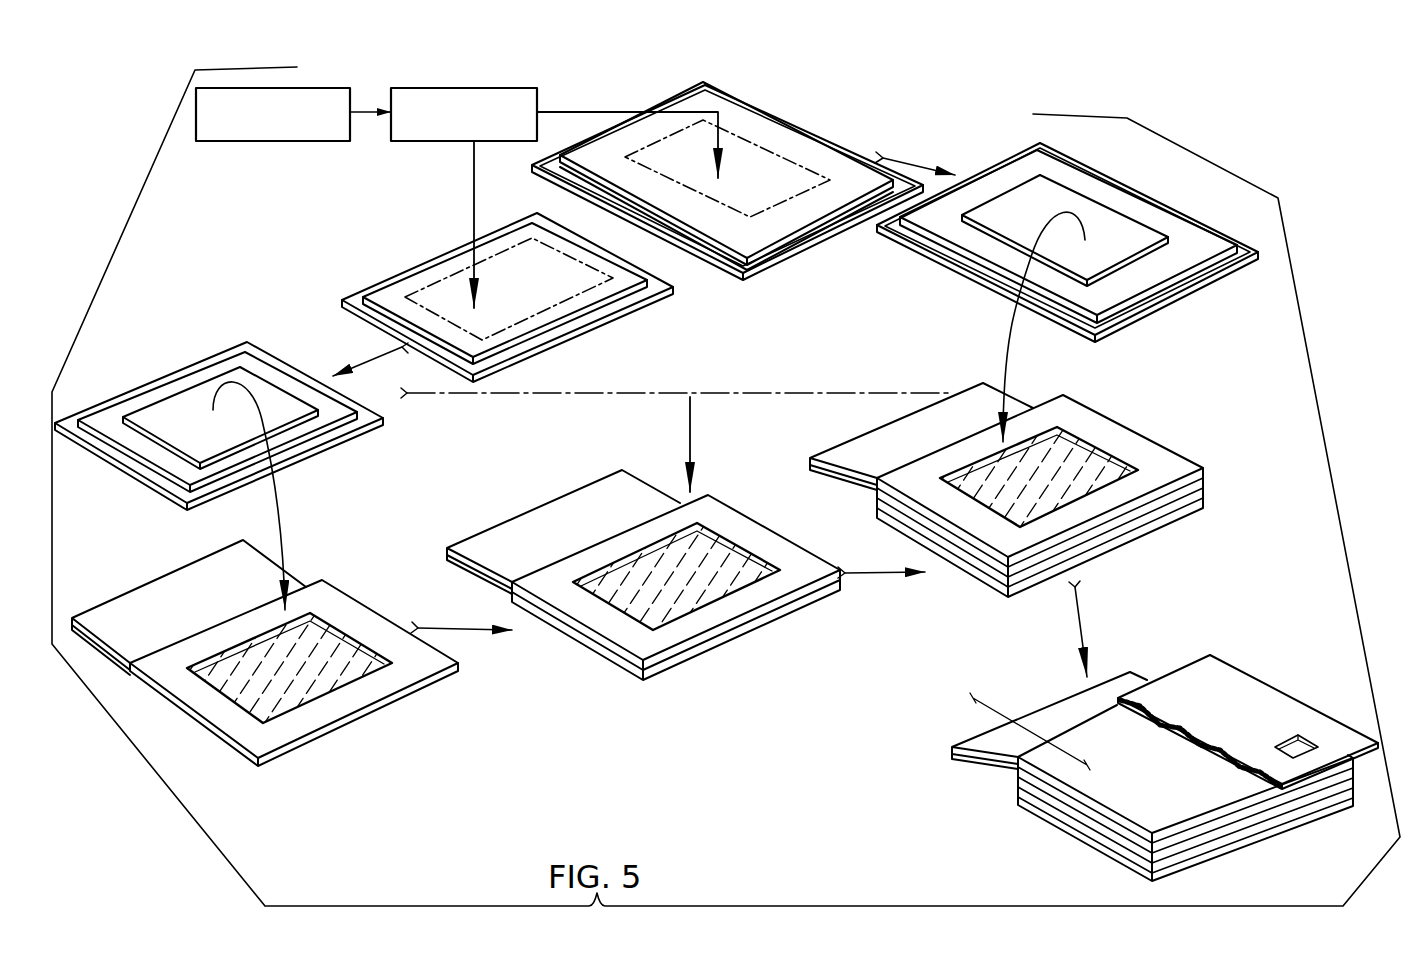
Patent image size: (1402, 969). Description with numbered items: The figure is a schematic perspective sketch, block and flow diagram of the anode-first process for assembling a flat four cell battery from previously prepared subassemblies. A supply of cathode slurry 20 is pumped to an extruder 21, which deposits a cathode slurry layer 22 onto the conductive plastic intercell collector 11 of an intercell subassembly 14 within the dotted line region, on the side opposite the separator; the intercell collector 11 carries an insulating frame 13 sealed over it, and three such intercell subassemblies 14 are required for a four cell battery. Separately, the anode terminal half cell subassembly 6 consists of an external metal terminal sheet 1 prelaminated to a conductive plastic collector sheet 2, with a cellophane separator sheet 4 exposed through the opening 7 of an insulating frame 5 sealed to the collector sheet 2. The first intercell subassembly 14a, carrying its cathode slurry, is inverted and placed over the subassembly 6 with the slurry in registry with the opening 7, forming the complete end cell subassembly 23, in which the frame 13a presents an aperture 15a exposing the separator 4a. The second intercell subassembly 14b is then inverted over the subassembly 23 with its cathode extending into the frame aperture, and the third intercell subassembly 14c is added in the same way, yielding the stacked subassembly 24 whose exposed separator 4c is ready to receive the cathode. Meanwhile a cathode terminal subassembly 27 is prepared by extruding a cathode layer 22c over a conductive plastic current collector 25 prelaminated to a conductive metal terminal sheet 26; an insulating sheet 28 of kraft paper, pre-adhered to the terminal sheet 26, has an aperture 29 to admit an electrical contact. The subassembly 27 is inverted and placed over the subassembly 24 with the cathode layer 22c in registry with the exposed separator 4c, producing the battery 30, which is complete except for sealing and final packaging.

The external metal terminal sheet 1 is at (115, 663).
The conductive plastic collector sheet 2 is at (163, 605).
The cellophane separator sheet 4 is at (310, 640).
The frame 5 is at (355, 615).
The anode terminal half cell subassembly 6 is at (360, 727).
The opening in the frame 7 is at (357, 648).
The conductive plastic intercell collector 11 is at (630, 280).
The frame 13 is at (603, 318).
The intercell subassembly 14 is at (433, 255).
The frame of first intercell subassembly 13a is at (537, 580).
The aperture in frame of first intercell subassembly 15a is at (737, 553).
The separator of first intercell subassembly 4a is at (718, 560).
The separator of third intercell subassembly 4c is at (1082, 460).
The first intercell subassembly 14a is at (1208, 488).
The second intercell subassembly 14b is at (1212, 473).
The third intercell subassembly 14c is at (1173, 448).
The cathode slurry supply 20 is at (327, 140).
The extruder 21 is at (446, 88).
The cathode slurry layer 22 is at (208, 390).
The cathode layer of cathode terminal subassembly 22c is at (1063, 198).
The complete end cell subassembly 23 is at (582, 648).
The stacked subassembly 24 is at (963, 575).
The conductive plastic current collector 25 is at (830, 163).
The conductive metal terminal sheet 26 is at (830, 222).
The end cathode half cell subassembly 27 is at (955, 280).
The insulating sheet 28 is at (772, 253).
The aperture 29 is at (1293, 740).
The battery 30 is at (1185, 657).